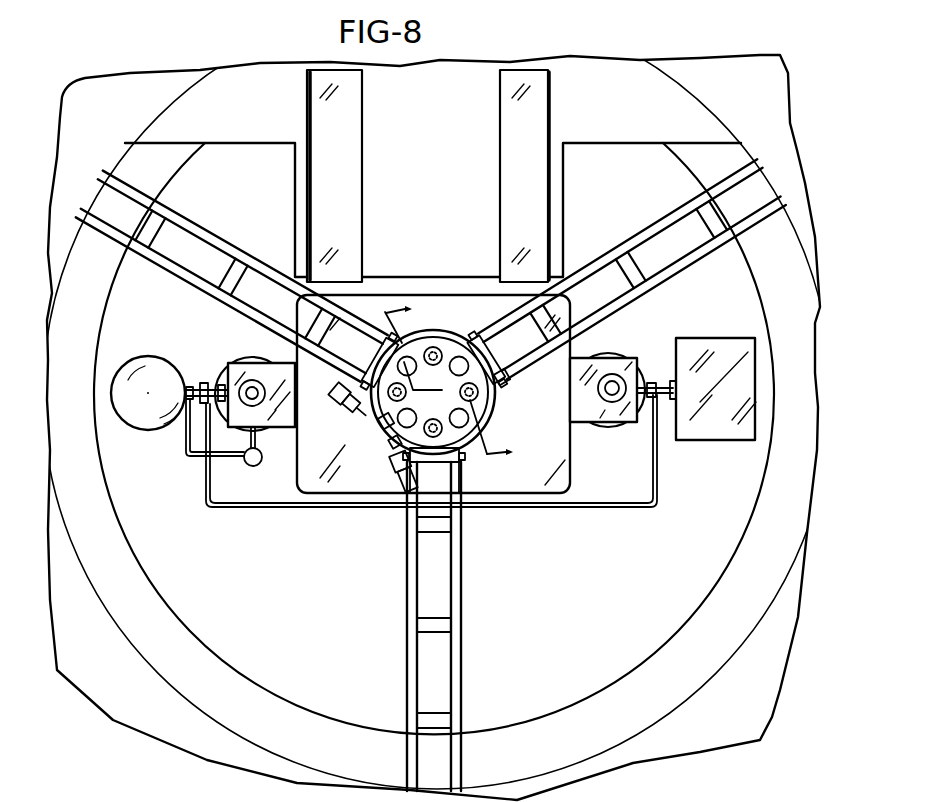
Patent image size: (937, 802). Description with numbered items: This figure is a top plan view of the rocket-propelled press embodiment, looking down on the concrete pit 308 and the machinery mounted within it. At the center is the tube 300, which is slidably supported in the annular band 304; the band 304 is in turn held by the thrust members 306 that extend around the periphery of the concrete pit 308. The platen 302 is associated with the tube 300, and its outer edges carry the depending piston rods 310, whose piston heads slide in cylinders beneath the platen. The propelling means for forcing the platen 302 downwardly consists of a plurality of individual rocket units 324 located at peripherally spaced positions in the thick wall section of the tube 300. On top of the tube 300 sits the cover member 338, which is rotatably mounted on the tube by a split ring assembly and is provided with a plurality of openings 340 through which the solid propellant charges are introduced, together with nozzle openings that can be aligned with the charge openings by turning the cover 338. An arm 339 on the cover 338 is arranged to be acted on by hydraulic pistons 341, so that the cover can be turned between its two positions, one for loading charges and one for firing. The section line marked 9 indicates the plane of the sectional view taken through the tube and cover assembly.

The tube 300 is at (455, 330).
The platen 302 is at (303, 488).
The annular band 304 is at (496, 411).
The thrust members 306 is at (167, 265).
The concrete pit 308 is at (322, 602).
The piston rods 310 is at (252, 385).
The rocket units 324 is at (498, 368).
The cover member 338 is at (452, 433).
The arm 339 is at (392, 446).
The openings 340 is at (457, 360).
The hydraulic pistons 341 is at (346, 383).
The section line 9- 9 is at (457, 378).